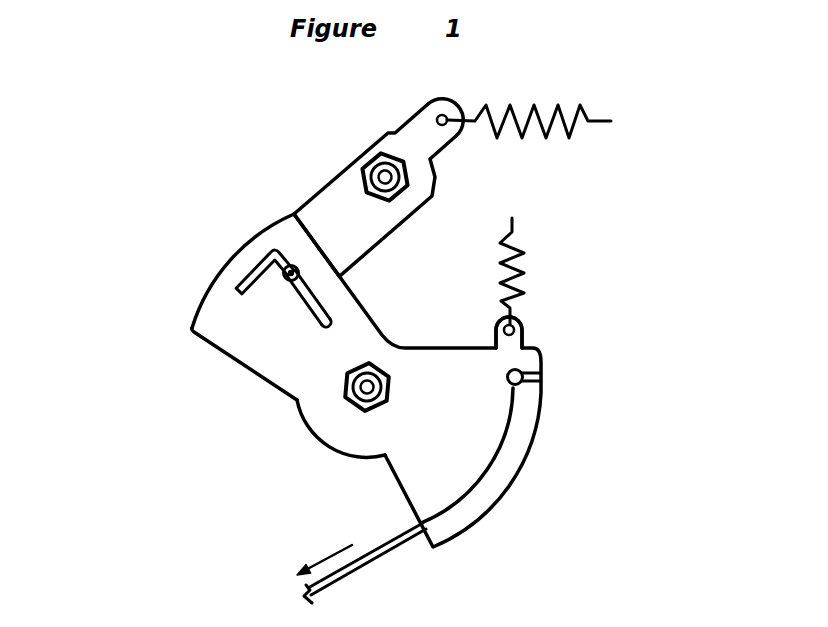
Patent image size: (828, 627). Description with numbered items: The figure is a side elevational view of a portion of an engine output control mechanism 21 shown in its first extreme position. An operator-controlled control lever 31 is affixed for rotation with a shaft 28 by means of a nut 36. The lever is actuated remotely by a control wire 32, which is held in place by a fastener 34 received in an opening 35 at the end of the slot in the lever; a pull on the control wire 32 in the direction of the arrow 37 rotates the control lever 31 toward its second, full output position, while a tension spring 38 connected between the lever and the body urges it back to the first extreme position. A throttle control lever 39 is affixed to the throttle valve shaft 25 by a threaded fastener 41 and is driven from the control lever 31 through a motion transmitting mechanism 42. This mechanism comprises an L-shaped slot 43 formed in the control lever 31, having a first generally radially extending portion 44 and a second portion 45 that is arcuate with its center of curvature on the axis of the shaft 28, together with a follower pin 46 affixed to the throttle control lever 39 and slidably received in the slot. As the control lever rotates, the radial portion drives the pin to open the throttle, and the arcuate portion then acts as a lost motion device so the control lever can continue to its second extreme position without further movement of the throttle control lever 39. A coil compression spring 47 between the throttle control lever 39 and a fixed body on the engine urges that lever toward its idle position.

The engine output control mechanism 21 is at (606, 343).
The throttle valve shaft 25 is at (384, 165).
The shaft 28 is at (362, 405).
The control lever 31 is at (230, 345).
The control wire 32 is at (361, 569).
The fastener 34 is at (508, 375).
The opening 35 is at (520, 383).
The nut 36 is at (388, 379).
The arrow 37 is at (332, 558).
The tension spring 38 is at (523, 290).
The throttle control lever 39 is at (328, 188).
The threaded fastener 41 is at (406, 187).
The motion transmitting mechanism 42 is at (250, 303).
The L-shaped slot 43 is at (296, 295).
The first generally radially extending portion 44 is at (318, 298).
The second portion 45 is at (262, 264).
The follower pin 46 is at (298, 265).
The coil compression spring 47 is at (518, 137).